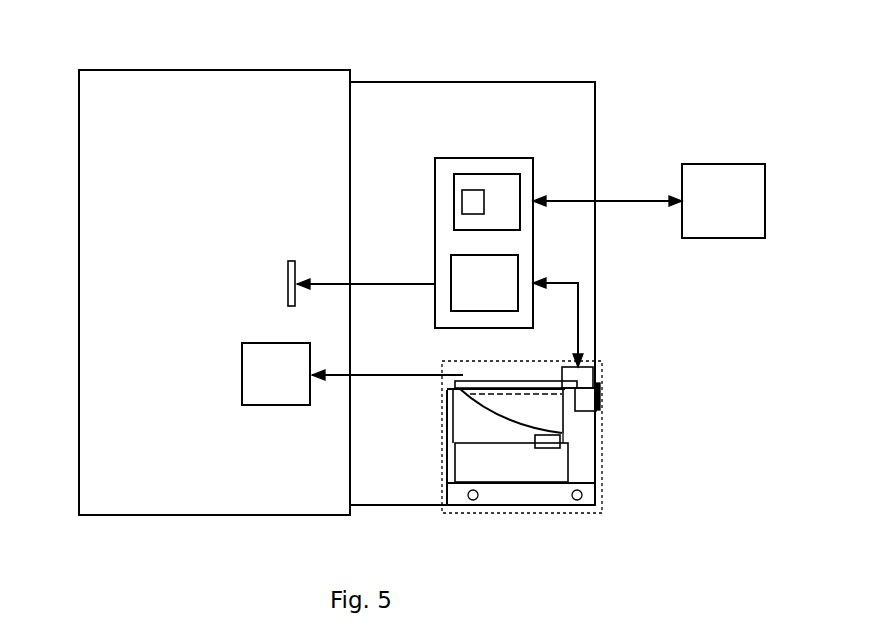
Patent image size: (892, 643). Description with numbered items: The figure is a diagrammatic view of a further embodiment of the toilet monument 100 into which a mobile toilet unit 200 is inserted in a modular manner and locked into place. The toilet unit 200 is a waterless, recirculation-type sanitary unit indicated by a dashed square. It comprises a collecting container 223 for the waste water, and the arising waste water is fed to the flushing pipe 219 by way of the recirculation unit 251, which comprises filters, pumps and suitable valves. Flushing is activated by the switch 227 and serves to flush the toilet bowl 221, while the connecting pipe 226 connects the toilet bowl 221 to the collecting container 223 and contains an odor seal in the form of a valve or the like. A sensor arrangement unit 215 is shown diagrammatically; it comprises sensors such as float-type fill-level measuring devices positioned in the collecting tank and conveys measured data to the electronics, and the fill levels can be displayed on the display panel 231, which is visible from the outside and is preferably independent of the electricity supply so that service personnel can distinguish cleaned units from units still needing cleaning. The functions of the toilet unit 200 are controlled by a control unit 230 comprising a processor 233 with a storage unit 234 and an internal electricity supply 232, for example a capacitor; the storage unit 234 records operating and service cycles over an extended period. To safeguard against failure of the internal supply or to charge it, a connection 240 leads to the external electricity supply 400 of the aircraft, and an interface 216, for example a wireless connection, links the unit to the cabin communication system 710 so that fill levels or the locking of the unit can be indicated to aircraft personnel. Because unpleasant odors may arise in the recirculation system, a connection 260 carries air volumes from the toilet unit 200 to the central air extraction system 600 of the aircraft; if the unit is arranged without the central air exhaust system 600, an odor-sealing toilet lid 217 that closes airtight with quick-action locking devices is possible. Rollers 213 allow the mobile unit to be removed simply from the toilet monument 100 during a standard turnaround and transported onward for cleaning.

The toilet monument 100 is at (173, 88).
The toilet unit 200 is at (567, 103).
The control unit 230 is at (440, 172).
The processor 233 is at (513, 226).
The storage unit 234 is at (475, 195).
The internal electricity supply 232 is at (484, 283).
The cabin communication system 710 is at (723, 201).
The interface 216 is at (607, 198).
The external electricity supply 400 is at (293, 252).
The connection 240 is at (407, 280).
The central air extraction system 600 is at (276, 374).
The connection 260 is at (402, 372).
The odor-sealing toilet lid 217 is at (530, 378).
The switch 227 is at (600, 380).
The display panel 231 is at (600, 395).
The sensor arrangement unit 215 is at (598, 410).
The toilet bowl 221 is at (508, 416).
The flushing pipe 219 is at (482, 394).
The collecting container 223 is at (511, 462).
The recirculation unit 251 is at (562, 441).
The connecting pipe 226 is at (585, 441).
The rollers 213 is at (577, 500).